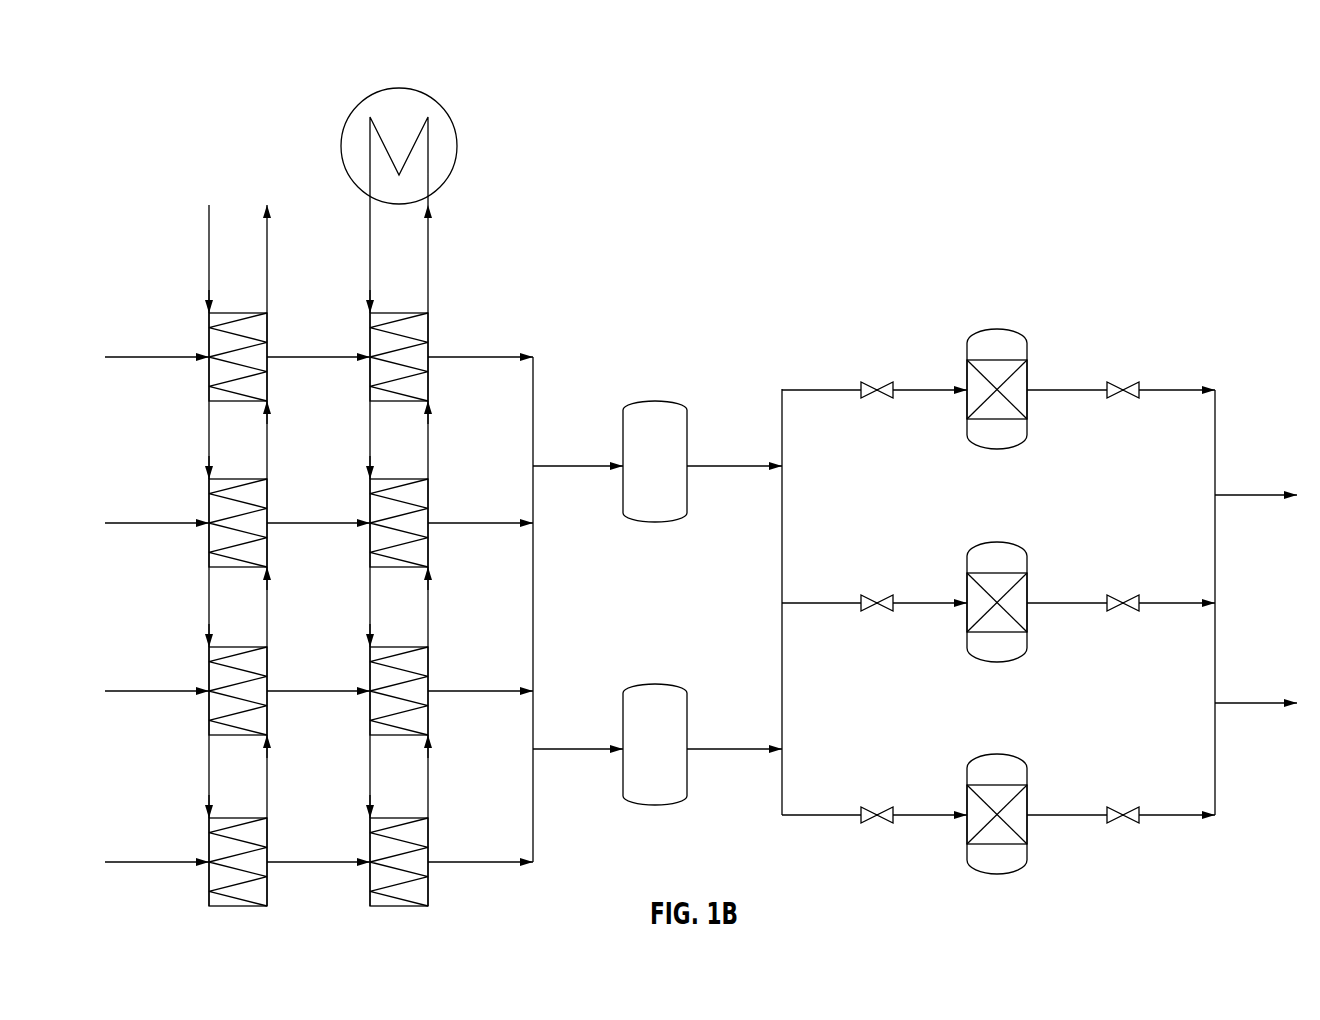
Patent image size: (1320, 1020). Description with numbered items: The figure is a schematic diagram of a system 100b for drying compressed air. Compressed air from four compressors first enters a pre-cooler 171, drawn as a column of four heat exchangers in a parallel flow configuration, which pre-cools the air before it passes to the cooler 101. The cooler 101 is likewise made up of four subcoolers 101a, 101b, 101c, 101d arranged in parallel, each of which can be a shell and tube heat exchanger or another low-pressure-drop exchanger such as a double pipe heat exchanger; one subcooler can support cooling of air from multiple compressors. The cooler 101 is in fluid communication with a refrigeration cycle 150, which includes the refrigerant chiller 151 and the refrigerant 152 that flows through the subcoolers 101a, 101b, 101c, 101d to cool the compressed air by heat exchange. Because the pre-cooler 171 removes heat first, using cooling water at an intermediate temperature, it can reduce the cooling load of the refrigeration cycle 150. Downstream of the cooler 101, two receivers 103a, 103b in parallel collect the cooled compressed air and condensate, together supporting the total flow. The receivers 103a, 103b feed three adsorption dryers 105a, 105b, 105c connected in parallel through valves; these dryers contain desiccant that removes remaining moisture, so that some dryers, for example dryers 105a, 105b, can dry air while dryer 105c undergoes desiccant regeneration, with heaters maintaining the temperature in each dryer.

The system 100b is at (1128, 132).
The refrigeration cycle 150 is at (446, 58).
The refrigerant chiller 151 is at (452, 122).
The refrigerant 152 is at (430, 265).
The cooler 101 is at (359, 916).
The subcooler 101a is at (430, 325).
The subcooler 101b is at (430, 490).
The subcooler 101c is at (430, 658).
The subcooler 101d is at (430, 828).
The pre-cooler 171 is at (199, 916).
The receiver 103a is at (678, 478).
The receiver 103b is at (678, 761).
The adsorption dryer 105a is at (1029, 352).
The adsorption dryer 105b is at (1029, 565).
The adsorption dryer 105c is at (1029, 777).